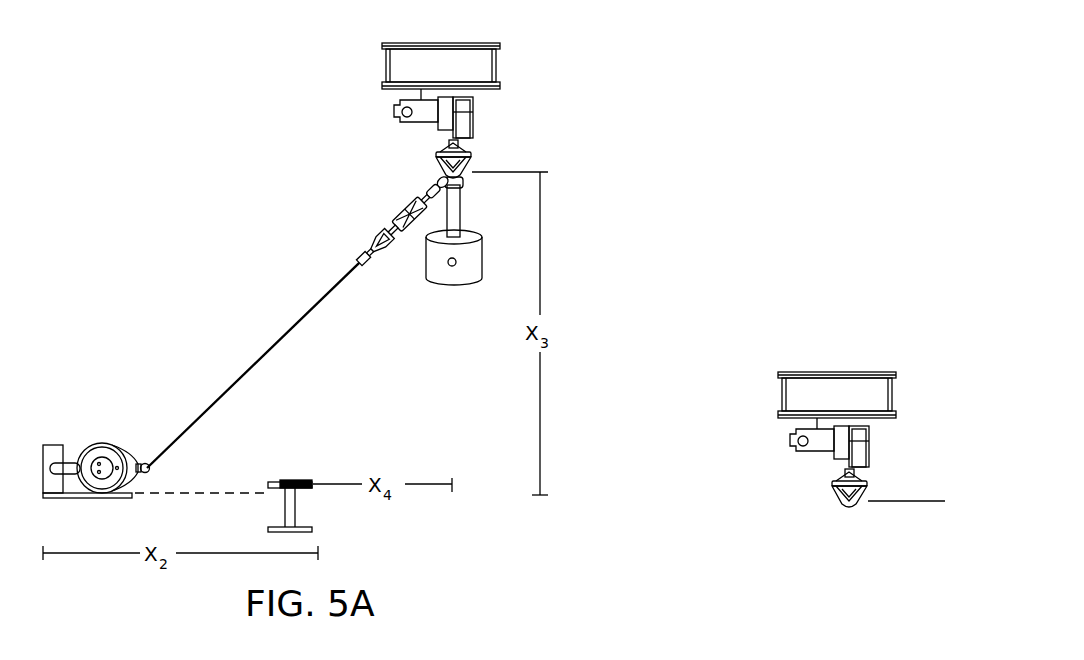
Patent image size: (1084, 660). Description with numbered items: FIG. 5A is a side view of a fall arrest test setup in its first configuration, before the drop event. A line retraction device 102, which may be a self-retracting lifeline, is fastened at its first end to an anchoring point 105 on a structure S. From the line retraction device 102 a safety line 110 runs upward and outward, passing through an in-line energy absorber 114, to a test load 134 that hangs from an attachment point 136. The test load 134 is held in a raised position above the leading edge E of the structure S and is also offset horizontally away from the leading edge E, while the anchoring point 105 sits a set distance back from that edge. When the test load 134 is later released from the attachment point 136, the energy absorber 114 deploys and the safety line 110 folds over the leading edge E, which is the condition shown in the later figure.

The line retraction device 102 is at (104, 443).
The anchoring point 105 is at (57, 445).
The safety line 110 is at (279, 340).
The energy absorber 114 is at (422, 192).
The test load 134 is at (478, 232).
The attachment point 136 is at (468, 152).
The structure S is at (280, 481).
The leading edge E is at (298, 490).